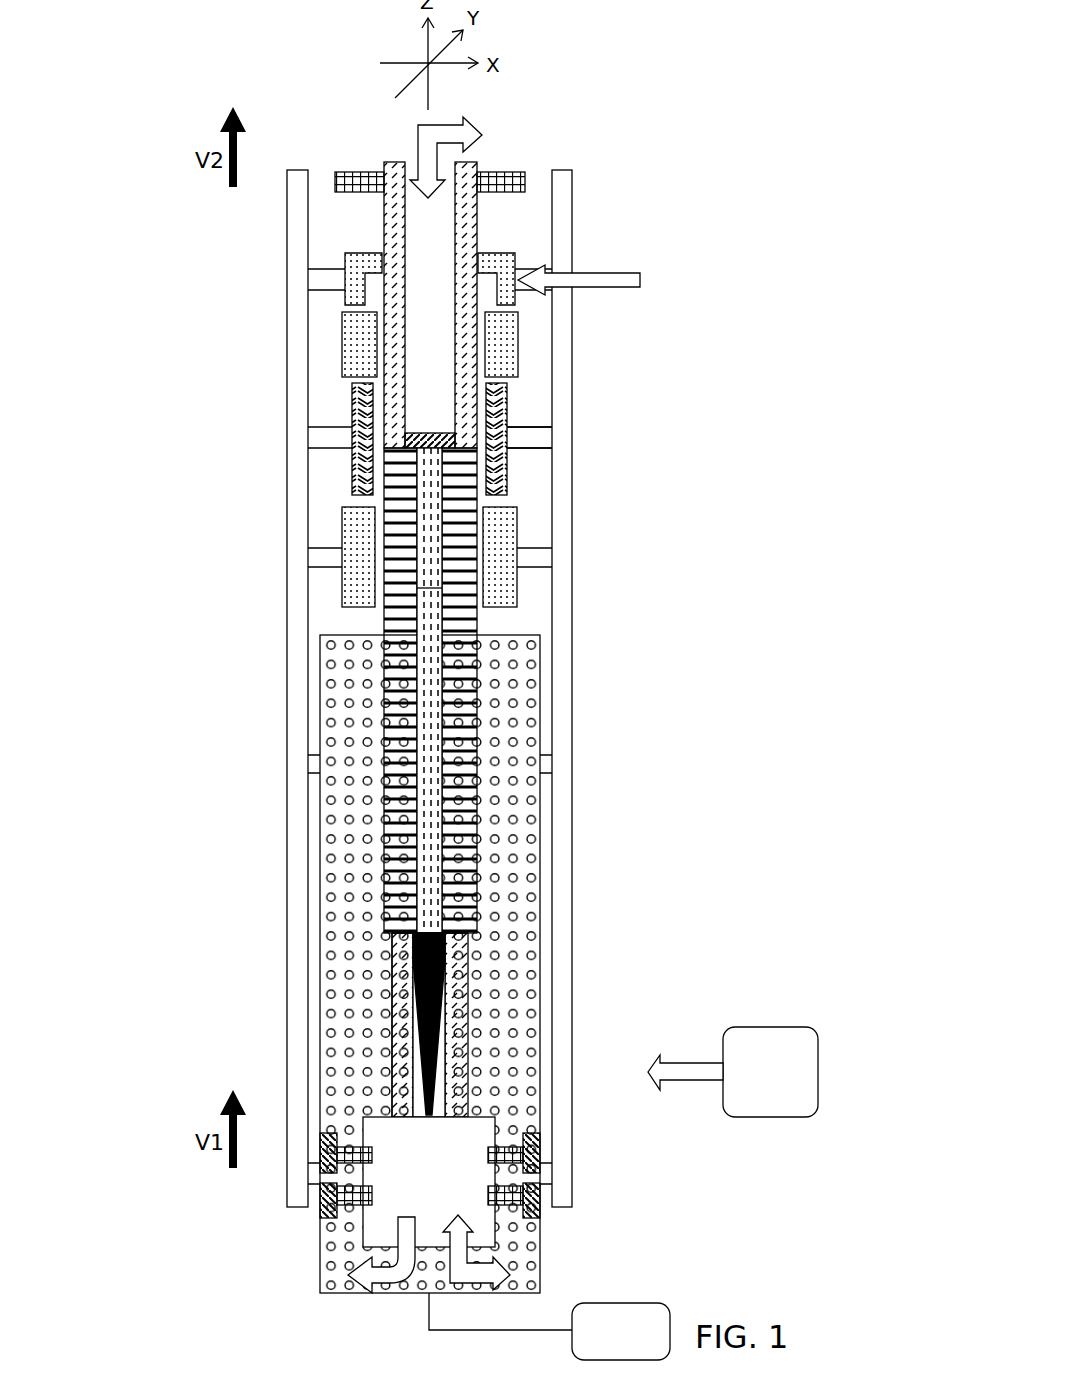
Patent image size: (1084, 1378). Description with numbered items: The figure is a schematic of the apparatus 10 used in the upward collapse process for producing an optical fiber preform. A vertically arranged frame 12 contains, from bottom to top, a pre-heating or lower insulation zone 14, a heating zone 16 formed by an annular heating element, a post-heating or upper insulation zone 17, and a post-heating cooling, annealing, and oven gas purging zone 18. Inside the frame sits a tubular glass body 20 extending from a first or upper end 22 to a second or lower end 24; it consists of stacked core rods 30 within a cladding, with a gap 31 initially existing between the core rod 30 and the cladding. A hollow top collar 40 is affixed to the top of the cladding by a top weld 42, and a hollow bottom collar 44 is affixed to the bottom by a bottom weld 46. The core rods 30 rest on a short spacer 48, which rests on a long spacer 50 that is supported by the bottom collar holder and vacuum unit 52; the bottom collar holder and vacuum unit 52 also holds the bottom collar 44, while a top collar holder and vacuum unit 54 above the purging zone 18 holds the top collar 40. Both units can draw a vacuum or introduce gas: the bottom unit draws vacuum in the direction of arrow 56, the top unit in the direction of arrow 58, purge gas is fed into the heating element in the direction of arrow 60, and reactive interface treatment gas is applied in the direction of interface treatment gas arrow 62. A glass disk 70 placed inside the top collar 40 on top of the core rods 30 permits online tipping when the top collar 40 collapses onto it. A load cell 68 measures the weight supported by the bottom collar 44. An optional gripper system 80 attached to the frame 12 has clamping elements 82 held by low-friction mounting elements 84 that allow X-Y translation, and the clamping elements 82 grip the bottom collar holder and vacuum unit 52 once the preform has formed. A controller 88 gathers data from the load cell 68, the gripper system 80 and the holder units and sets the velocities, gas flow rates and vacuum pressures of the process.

The apparatus 10 is at (762, 170).
The frame 12 is at (572, 175).
The pre-heating or lower insulation zone 14 is at (342, 530).
The heating zone 16 is at (555, 412).
The post-heating or upper insulation zone 17 is at (342, 335).
The post-heating cooling, annealing, and oven gas purging zone 18 is at (345, 262).
The glass body 20 is at (376, 808).
The first or upper end 22 is at (390, 968).
The second or lower end 24 is at (457, 440).
The core rod 30 is at (435, 531).
The gap 31 is at (450, 857).
The top collar 40 is at (477, 357).
The top weld 42 is at (370, 445).
The bottom collar 44 is at (394, 1000).
The bottom weld 46 is at (393, 940).
The short spacer 48 is at (445, 948).
The long spacer 50 is at (442, 1027).
The bottom collar holder and vacuum unit 52 is at (429, 1182).
The top collar holder and vacuum unit 54 is at (508, 172).
The arrow 56 is at (357, 1283).
The arrow 58 is at (418, 135).
The arrow 60 is at (658, 272).
The interface treatment gas arrow 62 is at (495, 1263).
The load cell 68 is at (549, 1326).
The glass disk 70 is at (437, 432).
The gripper system 80 is at (320, 692).
The clamping elements 82 is at (345, 1215).
The mounting elements 84 is at (540, 1145).
The controller 88 is at (733, 1072).